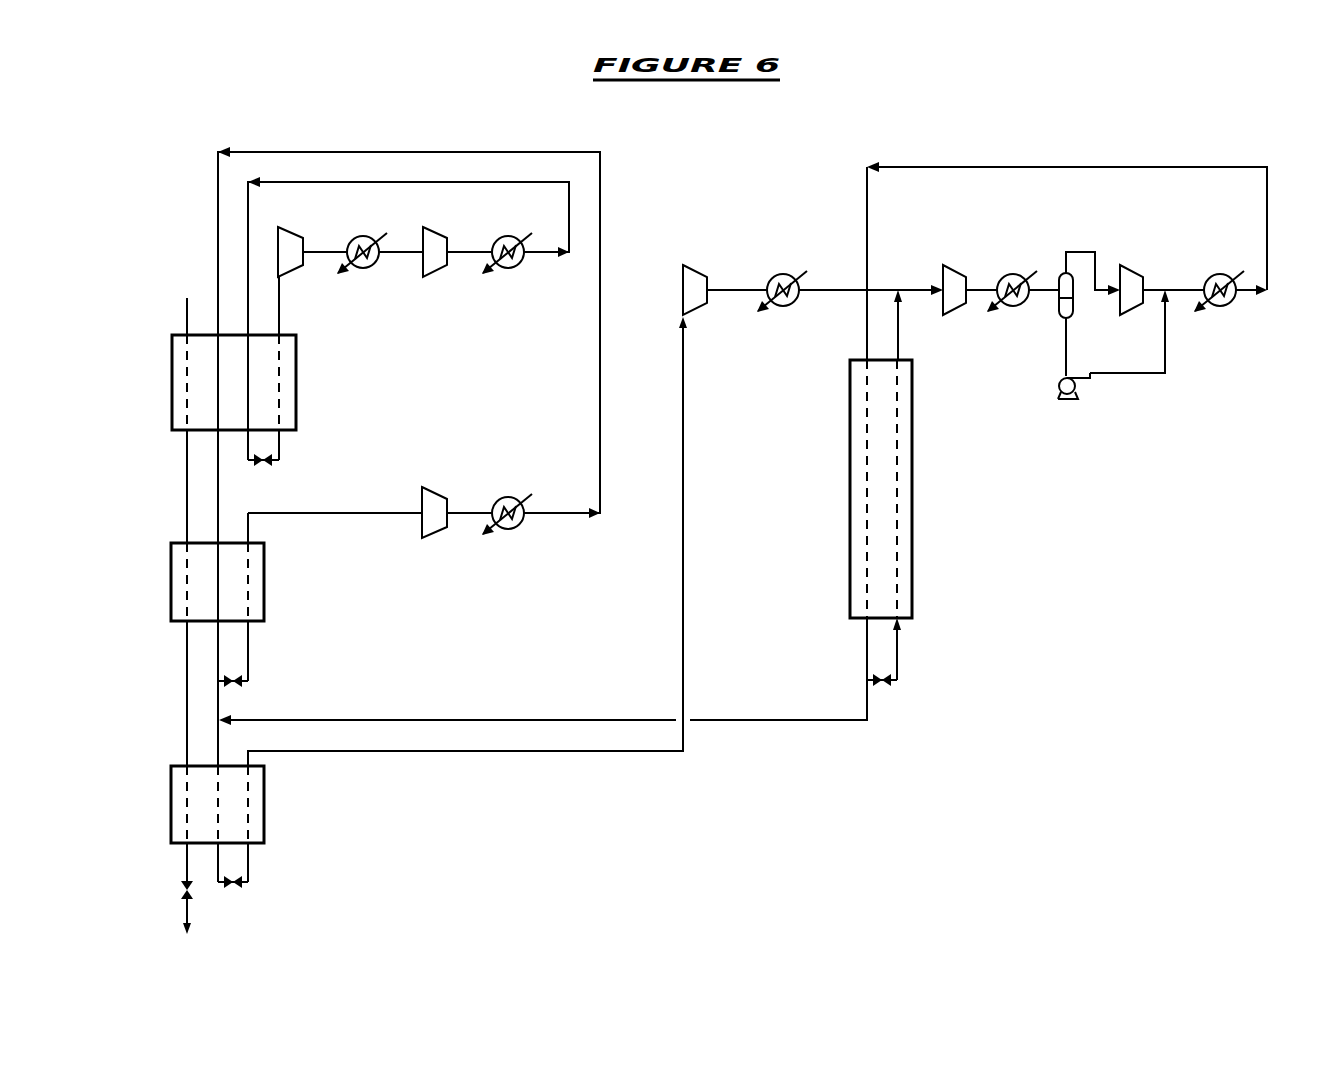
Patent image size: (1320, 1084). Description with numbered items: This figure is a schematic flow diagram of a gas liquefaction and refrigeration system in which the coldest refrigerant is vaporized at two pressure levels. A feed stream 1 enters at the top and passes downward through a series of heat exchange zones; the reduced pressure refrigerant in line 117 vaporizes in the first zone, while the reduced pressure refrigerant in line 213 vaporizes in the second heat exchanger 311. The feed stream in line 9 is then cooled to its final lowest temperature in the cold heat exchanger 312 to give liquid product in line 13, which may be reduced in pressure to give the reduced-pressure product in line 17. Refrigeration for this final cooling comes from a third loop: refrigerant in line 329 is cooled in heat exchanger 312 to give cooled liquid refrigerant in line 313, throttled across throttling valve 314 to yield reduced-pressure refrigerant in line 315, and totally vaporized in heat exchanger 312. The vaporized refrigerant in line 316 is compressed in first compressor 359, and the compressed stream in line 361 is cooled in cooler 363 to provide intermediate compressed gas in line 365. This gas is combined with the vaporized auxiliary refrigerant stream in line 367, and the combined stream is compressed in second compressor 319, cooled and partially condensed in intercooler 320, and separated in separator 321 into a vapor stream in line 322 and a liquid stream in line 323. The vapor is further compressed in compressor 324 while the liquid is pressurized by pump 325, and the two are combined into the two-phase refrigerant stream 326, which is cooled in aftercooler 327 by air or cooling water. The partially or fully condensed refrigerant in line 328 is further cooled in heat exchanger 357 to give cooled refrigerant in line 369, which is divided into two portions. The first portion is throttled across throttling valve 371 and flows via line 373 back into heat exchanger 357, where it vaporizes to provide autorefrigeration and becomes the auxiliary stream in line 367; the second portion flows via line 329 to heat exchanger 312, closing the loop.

The feed stream 1 is at (187, 318).
The feed stream line 9 is at (187, 722).
The liquid product line 13 is at (187, 859).
The reduced-pressure product line 17 is at (187, 912).
The reduced pressure refrigerant line 117 is at (306, 460).
The reduced pressure refrigerant line 213 is at (274, 679).
The second heat exchange zone or heat exchanger 311 is at (171, 584).
The cold heat exchanger 312 is at (171, 796).
The cooled liquid refrigerant line 313 is at (217, 884).
The throttling valve 314 is at (236, 884).
The reduced-pressure refrigerant line 315 is at (250, 851).
The vaporized refrigerant line 316 is at (445, 753).
The second compressor 319 is at (948, 241).
The intercooler 320 is at (1005, 275).
The separator 321 is at (1058, 312).
The vapor stream line 322 is at (1070, 251).
The liquid stream line 323 is at (1092, 354).
The compressor 324 is at (1123, 241).
The pump 325 is at (1058, 394).
The two-phase refrigerant stream 326 is at (1193, 268).
The aftercooler 327 is at (1250, 310).
The partially or fully condensed refrigerant line 328 is at (1050, 166).
The refrigerant line 329 is at (410, 720).
The heat exchanger 357 is at (913, 530).
The first compressor 359 is at (683, 263).
The compressed stream line 361 is at (718, 290).
The cooler 363 is at (776, 275).
The intermediate compressed gas line 365 is at (806, 292).
The vaporized auxiliary refrigerant stream line 367 is at (900, 326).
The cooled refrigerant line 369 is at (864, 640).
The throttling valve 371 is at (884, 683).
The auxiliary refrigerant line 373 is at (924, 646).